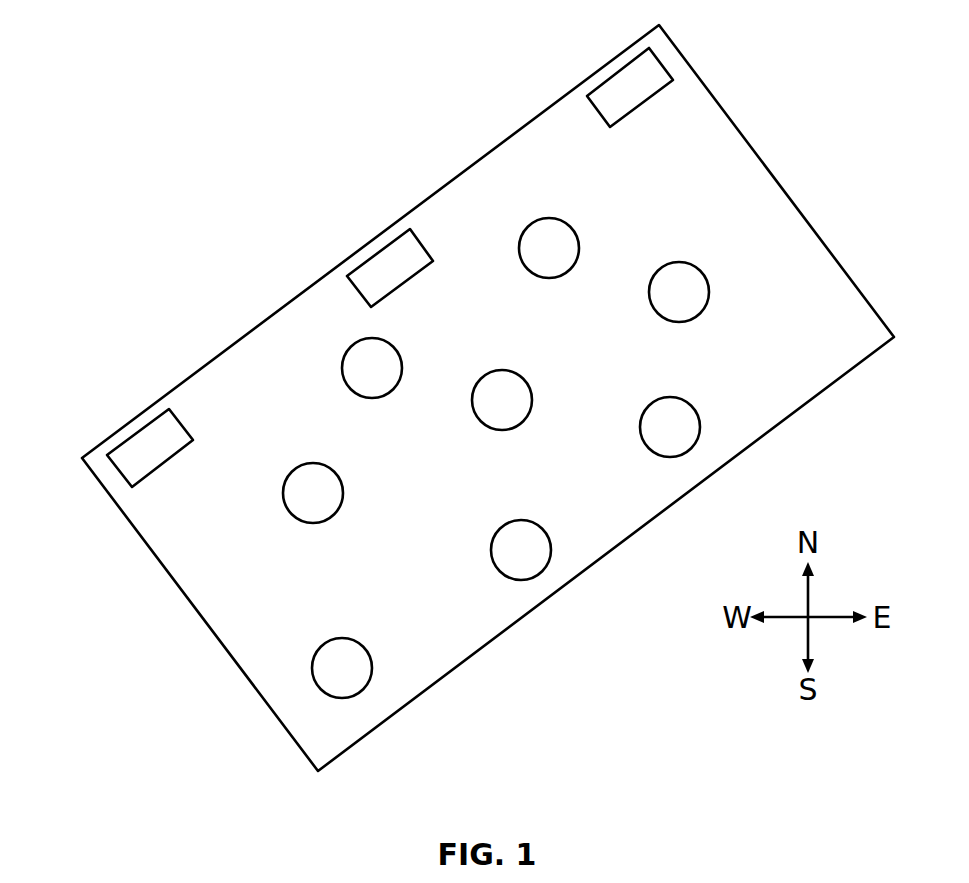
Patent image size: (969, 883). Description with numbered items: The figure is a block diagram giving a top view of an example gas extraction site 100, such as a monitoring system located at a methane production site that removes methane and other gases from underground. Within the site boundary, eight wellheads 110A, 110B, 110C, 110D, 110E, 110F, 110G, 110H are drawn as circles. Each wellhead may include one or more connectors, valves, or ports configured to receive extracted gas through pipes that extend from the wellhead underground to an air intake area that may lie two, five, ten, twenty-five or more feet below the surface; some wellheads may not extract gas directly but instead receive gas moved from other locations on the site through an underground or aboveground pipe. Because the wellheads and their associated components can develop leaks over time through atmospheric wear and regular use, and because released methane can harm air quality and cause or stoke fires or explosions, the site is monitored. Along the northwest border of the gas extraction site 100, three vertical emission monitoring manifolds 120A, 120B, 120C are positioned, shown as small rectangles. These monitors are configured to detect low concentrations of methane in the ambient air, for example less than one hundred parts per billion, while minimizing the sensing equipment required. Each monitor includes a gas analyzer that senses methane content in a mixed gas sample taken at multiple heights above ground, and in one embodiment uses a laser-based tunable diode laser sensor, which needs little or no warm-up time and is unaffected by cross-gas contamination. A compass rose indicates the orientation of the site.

The gas extraction site 100 is at (553, 724).
The wellhead 110A is at (323, 640).
The wellhead 110B is at (307, 523).
The wellhead 110C is at (500, 525).
The wellhead 110D is at (370, 398).
The wellhead 110E is at (497, 372).
The wellhead 110F is at (530, 225).
The wellhead 110G is at (677, 322).
The wellhead 110H is at (648, 405).
The vertical emission monitoring manifold 120A is at (138, 432).
The vertical emission monitoring manifold 120B is at (377, 252).
The vertical emission monitoring manifold 120C is at (617, 72).